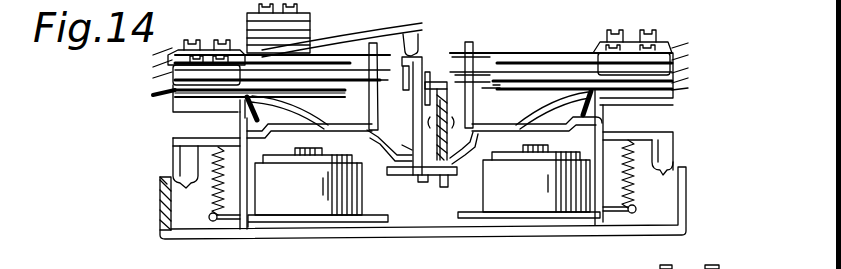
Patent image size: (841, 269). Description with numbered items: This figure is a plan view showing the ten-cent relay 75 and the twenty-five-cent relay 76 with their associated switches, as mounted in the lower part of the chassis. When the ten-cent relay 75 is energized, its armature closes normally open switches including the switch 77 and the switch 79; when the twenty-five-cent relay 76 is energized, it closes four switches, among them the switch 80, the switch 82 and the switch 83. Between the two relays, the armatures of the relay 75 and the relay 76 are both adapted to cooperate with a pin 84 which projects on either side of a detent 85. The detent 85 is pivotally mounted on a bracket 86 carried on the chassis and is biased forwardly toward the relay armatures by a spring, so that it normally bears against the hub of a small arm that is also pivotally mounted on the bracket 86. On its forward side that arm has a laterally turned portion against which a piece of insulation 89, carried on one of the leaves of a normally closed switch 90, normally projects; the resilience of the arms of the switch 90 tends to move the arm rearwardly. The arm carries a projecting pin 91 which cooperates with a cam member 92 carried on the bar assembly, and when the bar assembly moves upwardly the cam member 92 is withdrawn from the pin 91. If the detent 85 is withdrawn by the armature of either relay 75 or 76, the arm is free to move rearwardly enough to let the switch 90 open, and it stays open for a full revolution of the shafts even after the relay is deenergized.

The ten-cent relay 75 is at (352, 193).
The twenty-five-cent relay 76 is at (533, 197).
The switch 77 is at (377, 68).
The switch 79 is at (323, 92).
The switch 80 is at (521, 53).
The switch 82 is at (495, 88).
The switch 83 is at (497, 90).
The pin 84 is at (412, 176).
The detent 85 is at (420, 148).
The bracket 86 is at (417, 118).
The piece of insulation 89 is at (423, 32).
The normally closed switch 90 is at (357, 33).
The projecting pin 91 is at (438, 82).
The cam member 92 is at (445, 90).